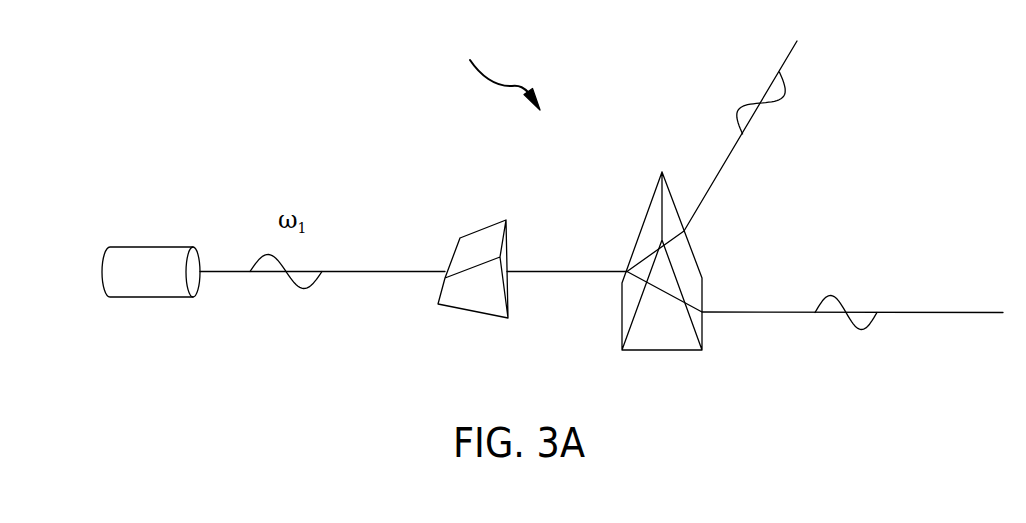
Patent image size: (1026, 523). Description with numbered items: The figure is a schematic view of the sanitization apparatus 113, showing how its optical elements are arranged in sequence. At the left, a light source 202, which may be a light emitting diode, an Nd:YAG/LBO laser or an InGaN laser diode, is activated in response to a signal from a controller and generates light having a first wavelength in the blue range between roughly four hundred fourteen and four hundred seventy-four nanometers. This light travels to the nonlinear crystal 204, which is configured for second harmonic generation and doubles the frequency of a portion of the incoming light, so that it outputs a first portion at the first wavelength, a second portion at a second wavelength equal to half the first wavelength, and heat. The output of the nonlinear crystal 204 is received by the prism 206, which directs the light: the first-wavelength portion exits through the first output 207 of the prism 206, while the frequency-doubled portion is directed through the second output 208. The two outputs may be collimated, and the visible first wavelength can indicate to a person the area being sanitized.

The sanitization apparatus 113 is at (491, 69).
The light source 202 is at (130, 270).
The nonlinear crystal 204 is at (478, 253).
The prism 206 is at (657, 247).
The first output 207 is at (703, 312).
The second output 208 is at (684, 231).